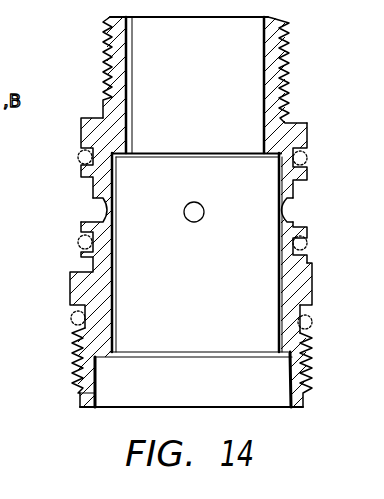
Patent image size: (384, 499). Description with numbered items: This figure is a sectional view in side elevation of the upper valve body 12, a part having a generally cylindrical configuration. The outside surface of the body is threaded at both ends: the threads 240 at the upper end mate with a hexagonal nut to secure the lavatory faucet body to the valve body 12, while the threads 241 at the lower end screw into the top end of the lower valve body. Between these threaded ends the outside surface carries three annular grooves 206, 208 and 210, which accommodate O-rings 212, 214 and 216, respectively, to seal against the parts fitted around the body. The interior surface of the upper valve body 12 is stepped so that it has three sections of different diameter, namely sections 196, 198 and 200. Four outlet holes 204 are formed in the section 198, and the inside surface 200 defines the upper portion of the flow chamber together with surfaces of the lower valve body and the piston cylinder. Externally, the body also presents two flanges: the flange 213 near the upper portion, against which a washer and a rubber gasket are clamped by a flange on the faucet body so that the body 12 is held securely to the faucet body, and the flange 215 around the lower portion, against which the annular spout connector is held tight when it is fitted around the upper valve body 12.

The upper valve body 12 is at (72, 290).
The first interior diameter section 196 is at (265, 54).
The second interior diameter section 198 is at (274, 172).
The inside surface 200 is at (100, 396).
The outlet holes 204 is at (188, 203).
The annular groove 206 is at (306, 153).
The annular groove 208 is at (306, 243).
The annular groove 210 is at (307, 312).
The O-ring 212 is at (307, 164).
The flange 213 is at (88, 118).
The O-ring 214 is at (307, 248).
The flange 215 is at (312, 268).
The O-ring 216 is at (308, 325).
The threads 240 is at (107, 44).
The threads 241 is at (77, 363).